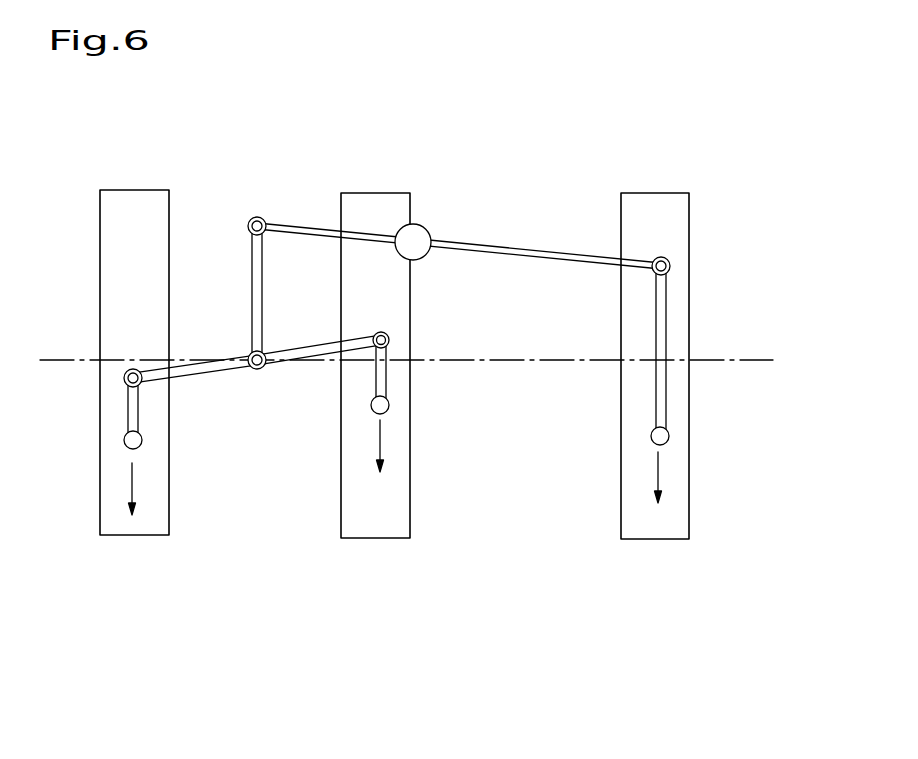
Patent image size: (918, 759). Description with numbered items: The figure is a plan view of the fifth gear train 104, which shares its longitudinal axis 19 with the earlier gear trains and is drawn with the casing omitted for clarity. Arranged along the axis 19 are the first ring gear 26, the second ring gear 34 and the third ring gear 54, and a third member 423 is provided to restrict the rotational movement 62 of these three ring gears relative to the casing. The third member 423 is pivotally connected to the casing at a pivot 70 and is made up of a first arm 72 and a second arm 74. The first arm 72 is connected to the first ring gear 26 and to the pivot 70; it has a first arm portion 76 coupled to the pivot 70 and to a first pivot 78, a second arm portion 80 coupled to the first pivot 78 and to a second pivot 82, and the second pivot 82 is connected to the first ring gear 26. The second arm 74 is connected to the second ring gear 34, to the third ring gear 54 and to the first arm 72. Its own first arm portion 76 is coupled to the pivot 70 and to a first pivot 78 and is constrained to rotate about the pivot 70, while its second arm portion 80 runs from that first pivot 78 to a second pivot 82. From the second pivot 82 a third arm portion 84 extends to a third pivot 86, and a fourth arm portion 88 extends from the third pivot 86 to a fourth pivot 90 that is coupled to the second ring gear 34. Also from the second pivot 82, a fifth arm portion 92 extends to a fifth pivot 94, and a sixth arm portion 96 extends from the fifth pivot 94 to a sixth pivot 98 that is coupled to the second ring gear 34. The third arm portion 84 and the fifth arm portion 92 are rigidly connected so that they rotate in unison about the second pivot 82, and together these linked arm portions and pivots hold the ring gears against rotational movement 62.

The longitudinal axis 19 is at (737, 362).
The first ring gear 26 is at (660, 210).
The second ring gear 34 is at (365, 203).
The third ring gear 54 is at (115, 210).
The rotational movement 62 is at (128, 480).
The pivot 70 is at (418, 228).
The first arm 72 is at (551, 206).
The second arm 74 is at (252, 557).
The first arm portion 76 is at (297, 223).
The first pivot 78 is at (249, 222).
The second arm portion 80 is at (255, 300).
The second pivot 82 is at (263, 367).
The third arm portion 84 is at (303, 348).
The third pivot 86 is at (388, 337).
The fourth arm portion 88 is at (386, 373).
The fourth pivot 90 is at (387, 408).
The fifth arm portion 92 is at (208, 372).
The fifth pivot 94 is at (124, 375).
The sixth arm portion 96 is at (130, 407).
The sixth pivot 98 is at (143, 444).
The fifth gear train 104 is at (566, 627).
The third member 423 is at (259, 126).